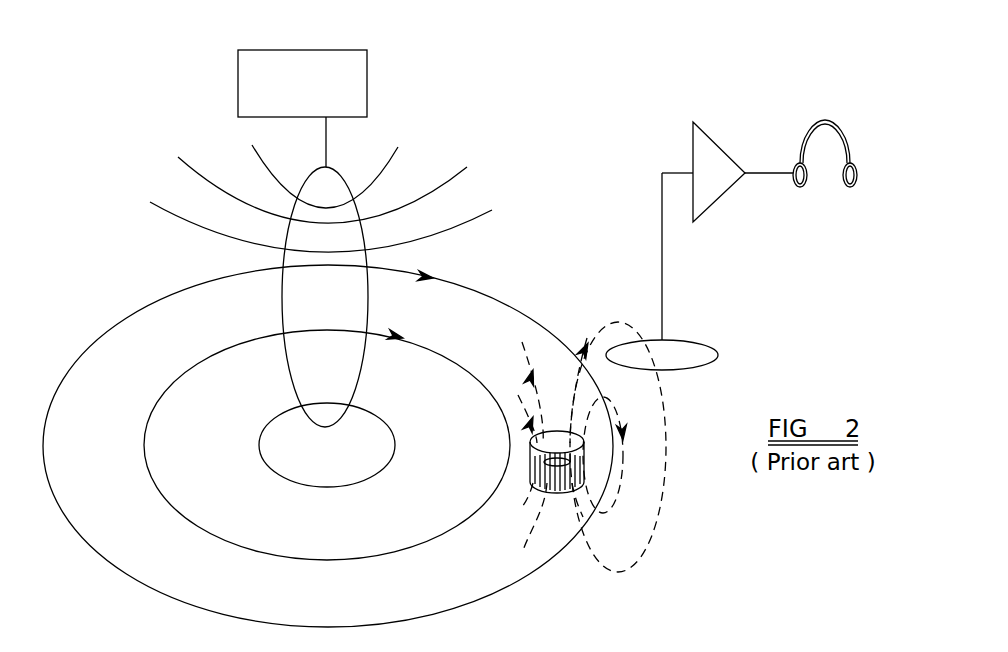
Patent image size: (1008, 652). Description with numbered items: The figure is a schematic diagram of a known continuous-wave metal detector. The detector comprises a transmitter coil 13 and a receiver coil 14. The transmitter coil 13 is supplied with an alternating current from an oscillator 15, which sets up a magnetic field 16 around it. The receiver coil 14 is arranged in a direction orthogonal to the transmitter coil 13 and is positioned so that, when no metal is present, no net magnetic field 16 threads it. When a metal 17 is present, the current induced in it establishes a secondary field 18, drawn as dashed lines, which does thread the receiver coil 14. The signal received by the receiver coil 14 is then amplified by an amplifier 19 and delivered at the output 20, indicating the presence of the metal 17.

The transmitter coil 13 is at (360, 157).
The receiver coil 14 is at (715, 328).
The oscillator 15 is at (255, 58).
The magnetic field 16 is at (62, 398).
The metal 17 is at (528, 458).
The secondary field 18 is at (665, 483).
The amplifier 19 is at (693, 160).
The output 20 is at (827, 120).